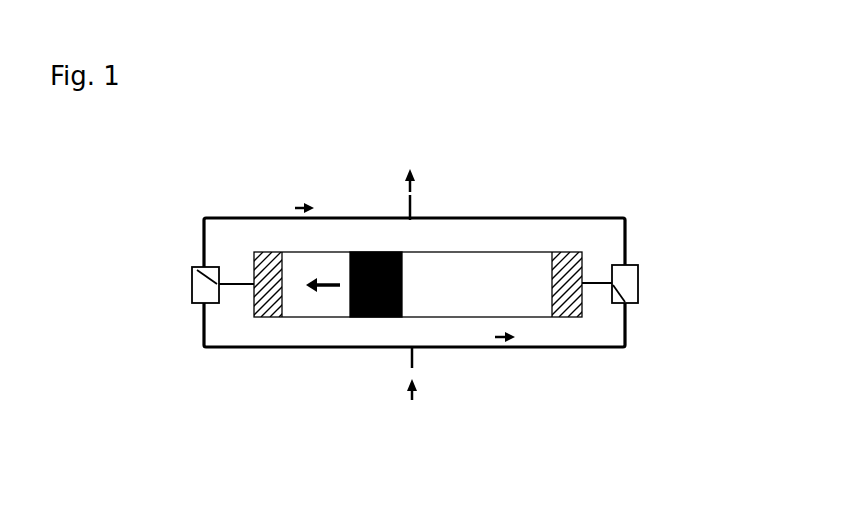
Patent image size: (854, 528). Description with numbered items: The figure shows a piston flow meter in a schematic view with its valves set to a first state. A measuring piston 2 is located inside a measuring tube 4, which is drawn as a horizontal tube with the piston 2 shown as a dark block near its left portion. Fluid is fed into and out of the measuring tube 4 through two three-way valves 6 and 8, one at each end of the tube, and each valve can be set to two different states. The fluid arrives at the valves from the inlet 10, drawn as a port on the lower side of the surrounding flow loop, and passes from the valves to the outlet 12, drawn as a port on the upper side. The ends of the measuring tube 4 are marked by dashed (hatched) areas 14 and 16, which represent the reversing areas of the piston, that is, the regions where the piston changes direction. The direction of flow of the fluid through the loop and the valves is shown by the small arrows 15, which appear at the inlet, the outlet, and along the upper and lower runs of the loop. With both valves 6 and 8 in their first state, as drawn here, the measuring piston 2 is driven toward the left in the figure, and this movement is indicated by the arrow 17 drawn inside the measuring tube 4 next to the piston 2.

The measuring piston 2 is at (366, 323).
The measuring tube 4 is at (539, 324).
The three-way valve 6 is at (190, 294).
The three-way valve 8 is at (641, 293).
The inlet 10 is at (405, 366).
The outlet 12 is at (414, 206).
The reversing area 14 is at (257, 320).
The arrows 15 is at (398, 181).
The reversing area 16 is at (580, 318).
The arrow 17 is at (329, 297).